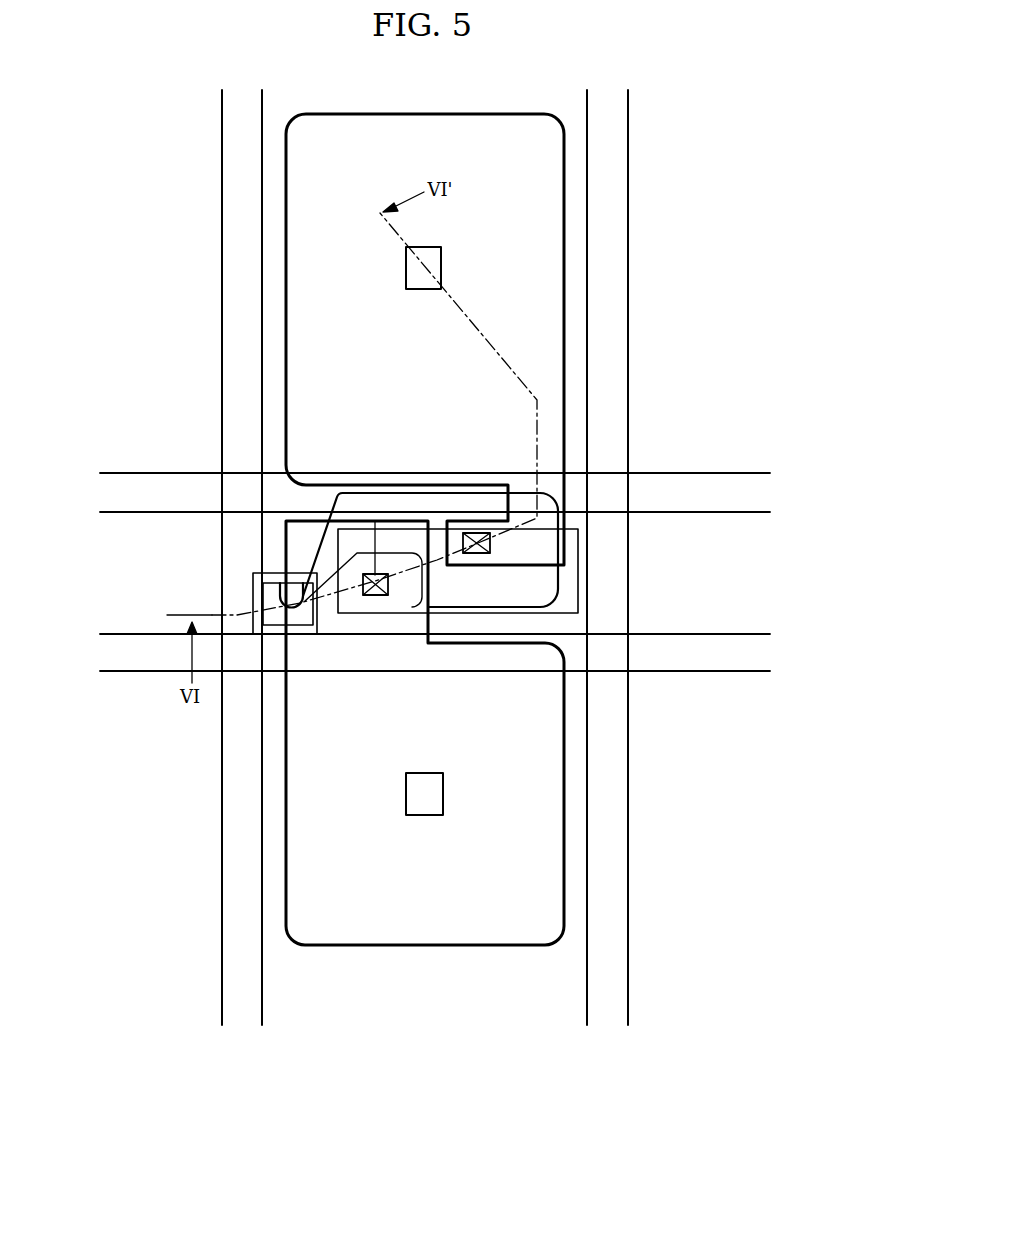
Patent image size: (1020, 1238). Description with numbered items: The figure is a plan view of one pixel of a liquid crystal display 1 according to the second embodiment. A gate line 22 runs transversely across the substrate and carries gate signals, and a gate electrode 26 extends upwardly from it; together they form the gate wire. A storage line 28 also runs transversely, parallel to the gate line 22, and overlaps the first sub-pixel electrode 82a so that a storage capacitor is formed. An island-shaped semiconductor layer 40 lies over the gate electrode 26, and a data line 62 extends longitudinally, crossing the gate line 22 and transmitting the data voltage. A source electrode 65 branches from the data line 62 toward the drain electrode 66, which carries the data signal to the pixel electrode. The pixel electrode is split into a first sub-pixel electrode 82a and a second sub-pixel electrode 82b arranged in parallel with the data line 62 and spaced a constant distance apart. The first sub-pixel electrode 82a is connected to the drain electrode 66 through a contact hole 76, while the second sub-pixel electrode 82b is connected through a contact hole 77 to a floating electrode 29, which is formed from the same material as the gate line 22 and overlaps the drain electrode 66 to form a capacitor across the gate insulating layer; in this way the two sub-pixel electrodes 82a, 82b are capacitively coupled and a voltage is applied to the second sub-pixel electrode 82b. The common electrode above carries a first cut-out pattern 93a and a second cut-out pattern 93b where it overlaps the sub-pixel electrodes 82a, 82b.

The thin film transistor array panel 1 is at (414, 1066).
The gate line 22 is at (122, 674).
The gate electrode 26 is at (253, 577).
The storage line 28 is at (690, 473).
The floating electrode 29 is at (578, 572).
The semiconductor layer 40 is at (263, 598).
The data line 62 is at (222, 318).
The source electrode 65 is at (250, 612).
The drain electrode 66 is at (290, 633).
The contact hole 76 is at (492, 536).
The contact hole 77 is at (390, 582).
The first sub-pixel electrode 82a is at (564, 255).
The second sub-pixel electrode 82b is at (564, 740).
The first cut-out pattern 93a is at (442, 247).
The second cut-out pattern 93b is at (421, 815).